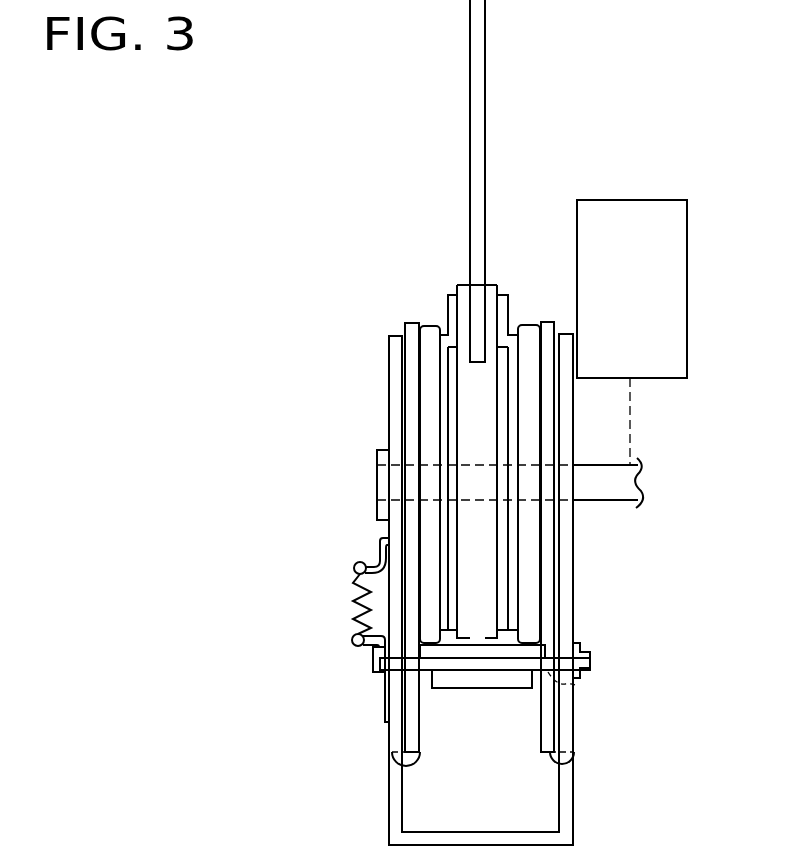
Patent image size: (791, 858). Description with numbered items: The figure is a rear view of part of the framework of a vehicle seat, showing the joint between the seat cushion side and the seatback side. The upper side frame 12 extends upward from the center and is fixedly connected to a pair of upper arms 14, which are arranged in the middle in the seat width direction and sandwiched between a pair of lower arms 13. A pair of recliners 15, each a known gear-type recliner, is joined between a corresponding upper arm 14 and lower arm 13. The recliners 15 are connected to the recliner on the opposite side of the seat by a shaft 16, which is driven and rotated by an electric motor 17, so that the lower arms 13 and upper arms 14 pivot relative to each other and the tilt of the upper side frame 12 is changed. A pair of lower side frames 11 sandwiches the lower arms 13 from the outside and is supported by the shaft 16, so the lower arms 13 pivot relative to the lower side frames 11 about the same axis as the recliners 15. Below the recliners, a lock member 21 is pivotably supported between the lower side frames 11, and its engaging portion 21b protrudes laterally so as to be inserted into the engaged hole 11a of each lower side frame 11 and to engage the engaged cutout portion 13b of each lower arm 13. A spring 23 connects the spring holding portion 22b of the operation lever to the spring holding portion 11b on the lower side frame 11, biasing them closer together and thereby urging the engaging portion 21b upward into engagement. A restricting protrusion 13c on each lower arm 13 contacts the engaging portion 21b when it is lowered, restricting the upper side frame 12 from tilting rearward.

The lower side frame 11 is at (389, 372).
The engaged hole 11a is at (590, 658).
The spring holding portion 11b is at (360, 562).
The upper side frame 12 is at (483, 72).
The lower arm 13 is at (405, 397).
The engaged cutout portion 13b is at (578, 686).
The restricting protrusion 13c is at (392, 770).
The upper arm 14 is at (494, 395).
The recliner 15 is at (430, 326).
The shaft 16 is at (622, 500).
The electric motor 17 is at (630, 198).
The lock member 21 is at (483, 672).
The engaging portion 21b is at (385, 690).
The spring holding portion 22b is at (355, 638).
The spring 23 is at (350, 592).